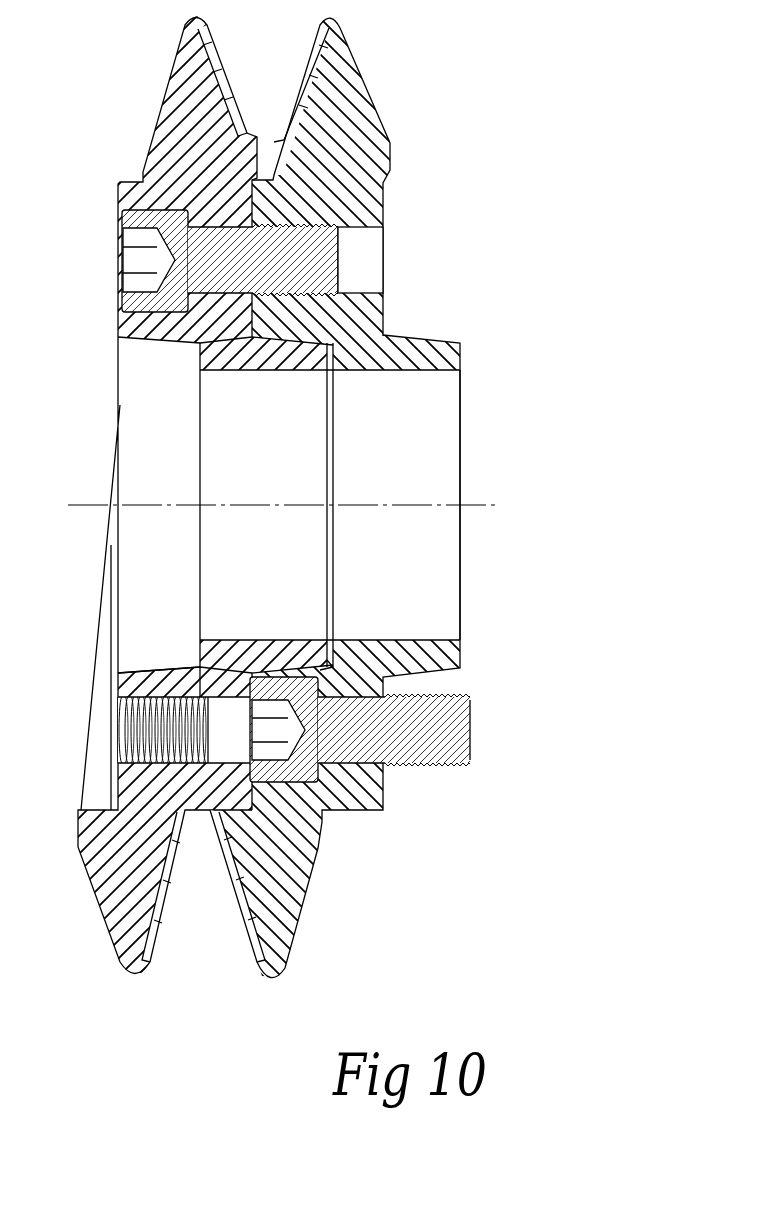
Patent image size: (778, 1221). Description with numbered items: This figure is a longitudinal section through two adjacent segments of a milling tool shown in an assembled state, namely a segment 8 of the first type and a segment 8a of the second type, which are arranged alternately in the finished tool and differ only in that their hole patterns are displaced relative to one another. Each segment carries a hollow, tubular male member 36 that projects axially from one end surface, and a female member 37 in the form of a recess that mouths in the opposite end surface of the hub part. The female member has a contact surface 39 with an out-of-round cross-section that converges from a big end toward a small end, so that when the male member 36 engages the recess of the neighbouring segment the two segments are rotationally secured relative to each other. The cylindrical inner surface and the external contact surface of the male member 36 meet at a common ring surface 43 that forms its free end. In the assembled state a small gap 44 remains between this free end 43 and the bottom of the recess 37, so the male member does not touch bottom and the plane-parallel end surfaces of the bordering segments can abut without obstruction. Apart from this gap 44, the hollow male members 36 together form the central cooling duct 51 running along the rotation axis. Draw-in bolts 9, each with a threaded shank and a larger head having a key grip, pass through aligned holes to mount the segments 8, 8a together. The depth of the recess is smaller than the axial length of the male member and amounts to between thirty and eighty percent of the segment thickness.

The segment 8 is at (165, 73).
The segment of the second type 8a is at (365, 73).
The draw-in bolt 9 is at (454, 772).
The male member 36 is at (303, 345).
The female member 37 is at (130, 672).
The contact surface 39 is at (181, 450).
The ring surface 43 is at (333, 657).
The gap 44 is at (330, 424).
The cooling duct 51 is at (417, 462).